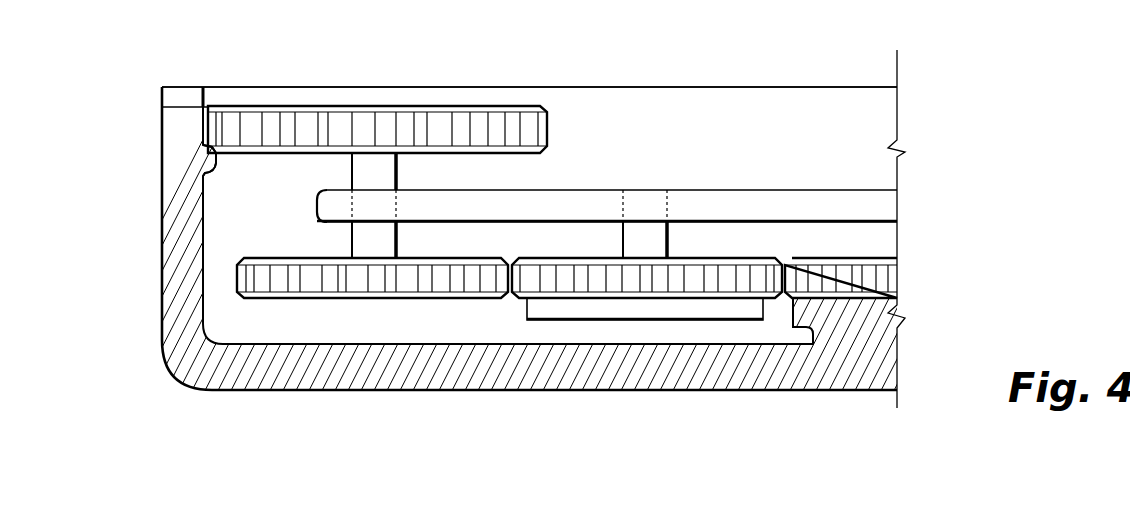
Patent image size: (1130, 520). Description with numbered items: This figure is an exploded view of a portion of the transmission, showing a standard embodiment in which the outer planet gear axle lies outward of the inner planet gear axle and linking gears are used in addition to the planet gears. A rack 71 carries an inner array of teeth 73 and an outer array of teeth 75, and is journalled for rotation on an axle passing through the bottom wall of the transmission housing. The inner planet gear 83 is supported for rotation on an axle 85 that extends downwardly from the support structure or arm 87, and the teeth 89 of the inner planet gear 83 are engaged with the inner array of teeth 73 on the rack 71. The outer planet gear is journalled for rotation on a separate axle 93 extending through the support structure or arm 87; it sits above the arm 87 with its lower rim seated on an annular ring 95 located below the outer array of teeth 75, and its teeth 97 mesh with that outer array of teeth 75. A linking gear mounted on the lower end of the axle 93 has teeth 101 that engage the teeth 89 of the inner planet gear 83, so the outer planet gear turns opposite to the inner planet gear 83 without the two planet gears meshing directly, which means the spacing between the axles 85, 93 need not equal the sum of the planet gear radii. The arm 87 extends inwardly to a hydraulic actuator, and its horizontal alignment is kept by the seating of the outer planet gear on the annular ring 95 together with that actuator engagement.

The rack 71 is at (828, 366).
The inner array of teeth 73 is at (878, 280).
The outer array of teeth 75 is at (211, 113).
The inner planet gear 83 is at (624, 302).
The axle 85 is at (657, 240).
The support structure or arm 87 is at (770, 203).
The teeth 89 is at (582, 278).
The axle 93 is at (368, 248).
The annular ring 95 is at (206, 172).
The teeth 97 is at (549, 134).
The teeth 101 is at (240, 278).